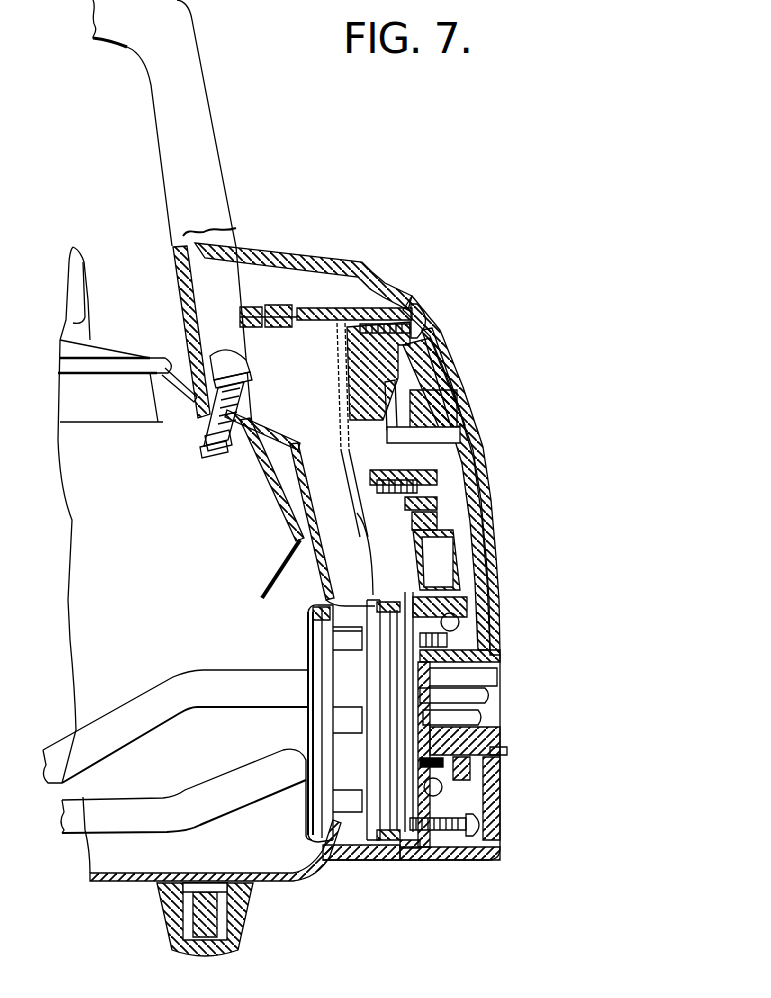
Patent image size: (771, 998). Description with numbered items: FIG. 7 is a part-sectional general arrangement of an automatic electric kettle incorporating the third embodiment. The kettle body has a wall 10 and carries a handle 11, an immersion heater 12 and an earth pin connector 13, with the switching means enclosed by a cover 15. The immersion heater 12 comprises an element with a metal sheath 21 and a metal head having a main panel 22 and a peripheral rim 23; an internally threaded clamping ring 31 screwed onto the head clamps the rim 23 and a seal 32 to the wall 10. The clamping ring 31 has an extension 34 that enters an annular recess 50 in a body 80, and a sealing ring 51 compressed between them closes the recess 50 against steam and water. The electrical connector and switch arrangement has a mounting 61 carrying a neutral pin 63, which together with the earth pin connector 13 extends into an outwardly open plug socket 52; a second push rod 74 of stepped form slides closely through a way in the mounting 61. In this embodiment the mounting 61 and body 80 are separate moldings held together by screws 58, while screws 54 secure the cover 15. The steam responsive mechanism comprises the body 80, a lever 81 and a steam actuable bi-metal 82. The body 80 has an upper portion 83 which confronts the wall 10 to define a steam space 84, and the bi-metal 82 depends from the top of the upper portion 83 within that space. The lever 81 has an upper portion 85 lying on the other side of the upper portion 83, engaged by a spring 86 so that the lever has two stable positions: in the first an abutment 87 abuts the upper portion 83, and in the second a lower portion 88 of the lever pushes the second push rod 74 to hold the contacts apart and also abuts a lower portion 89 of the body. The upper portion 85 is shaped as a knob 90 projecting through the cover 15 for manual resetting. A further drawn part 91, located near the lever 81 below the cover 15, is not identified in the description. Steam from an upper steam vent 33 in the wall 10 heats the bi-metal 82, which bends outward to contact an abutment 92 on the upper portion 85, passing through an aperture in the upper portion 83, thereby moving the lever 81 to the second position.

The wall 10 is at (300, 490).
The handle 11 is at (203, 137).
The immersion heater 12 is at (143, 698).
The earth pin connector 13 is at (493, 695).
The cover 15 is at (478, 522).
The metal sheath 21 is at (133, 808).
The main panel 22 is at (303, 660).
The peripheral rim 23 is at (310, 838).
The clamping ring 31 is at (340, 723).
The seal 32 is at (310, 847).
The upper steam vent 33 is at (270, 443).
The extension 34 is at (390, 765).
The annular recess 50 is at (393, 603).
The sealing ring 51 is at (390, 845).
The plug socket 52 is at (480, 680).
The screws 54 is at (427, 330).
The screws 58 is at (460, 637).
The mounting 61 is at (410, 842).
The neutral pin 63 is at (480, 715).
The second push rod 74 is at (500, 747).
The body 80 is at (497, 653).
The lever 81 is at (440, 573).
The steam actuable bi-metal 82 is at (345, 473).
The upper portion 83 is at (370, 420).
The steam space 84 is at (322, 437).
The upper portion 85 is at (437, 493).
The spring 86 is at (440, 372).
The abutment 87 is at (437, 512).
The lower portion 88 is at (467, 775).
The lower portion 89 is at (443, 845).
The knob 90 is at (445, 412).
The bearing 91 is at (467, 607).
The abutment 92 is at (363, 527).